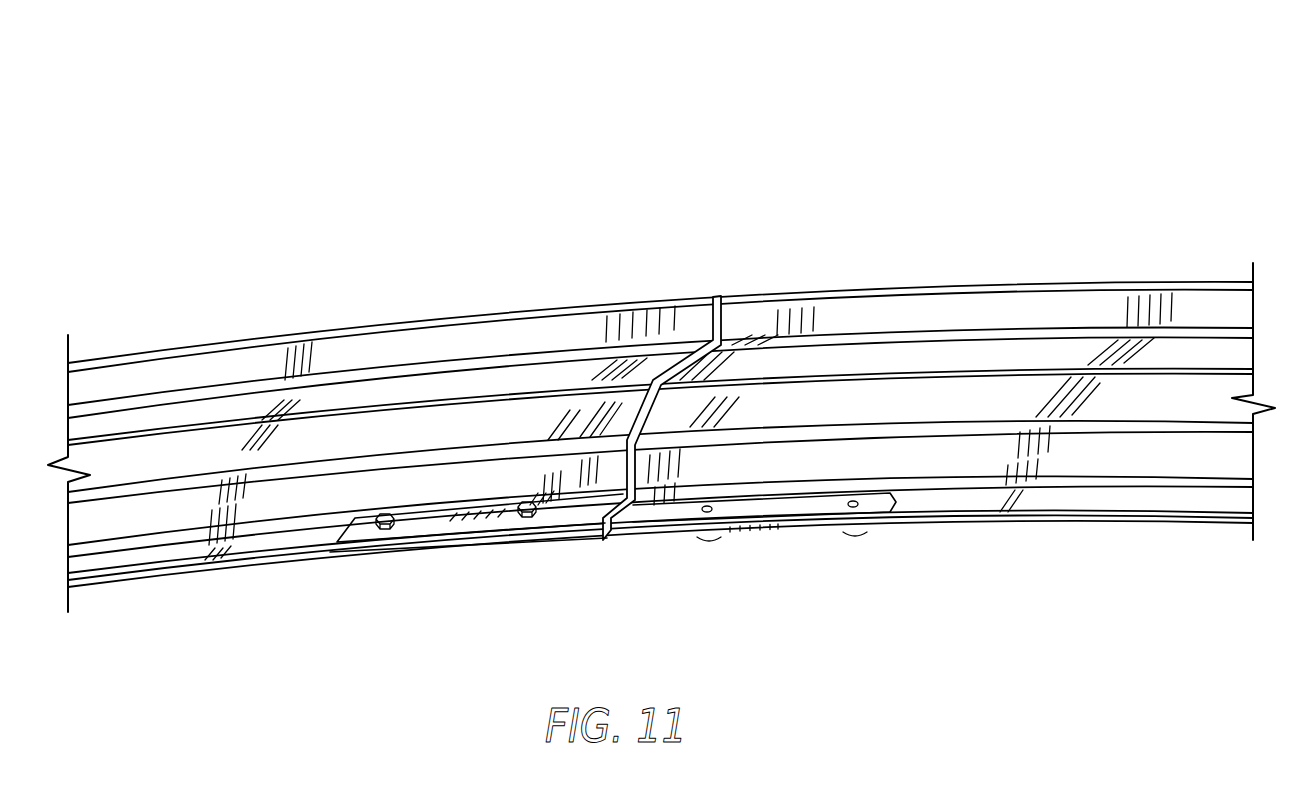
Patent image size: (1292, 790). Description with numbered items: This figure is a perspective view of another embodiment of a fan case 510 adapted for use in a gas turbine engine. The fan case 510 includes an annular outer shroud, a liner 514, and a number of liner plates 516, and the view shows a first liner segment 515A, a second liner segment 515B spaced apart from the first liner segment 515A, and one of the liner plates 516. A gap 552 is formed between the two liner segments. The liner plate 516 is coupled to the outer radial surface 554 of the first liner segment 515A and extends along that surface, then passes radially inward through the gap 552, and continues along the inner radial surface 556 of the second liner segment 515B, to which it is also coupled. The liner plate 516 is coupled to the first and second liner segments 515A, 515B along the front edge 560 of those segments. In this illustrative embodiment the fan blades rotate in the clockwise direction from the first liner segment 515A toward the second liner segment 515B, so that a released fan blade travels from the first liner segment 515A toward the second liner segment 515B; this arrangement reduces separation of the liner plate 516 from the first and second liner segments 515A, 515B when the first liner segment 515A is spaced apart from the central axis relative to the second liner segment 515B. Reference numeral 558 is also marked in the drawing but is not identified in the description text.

The fan case 510 is at (934, 134).
The liner 514 is at (758, 280).
The first liner segment 515A is at (399, 312).
The second liner segment 515B is at (934, 280).
The gap 552 is at (716, 284).
The outer radial surface 554 is at (300, 543).
The inner radial surface 556 is at (425, 523).
The lower flange 558 is at (166, 570).
The front edge 560 is at (252, 552).
The liner plate 516 is at (757, 554).